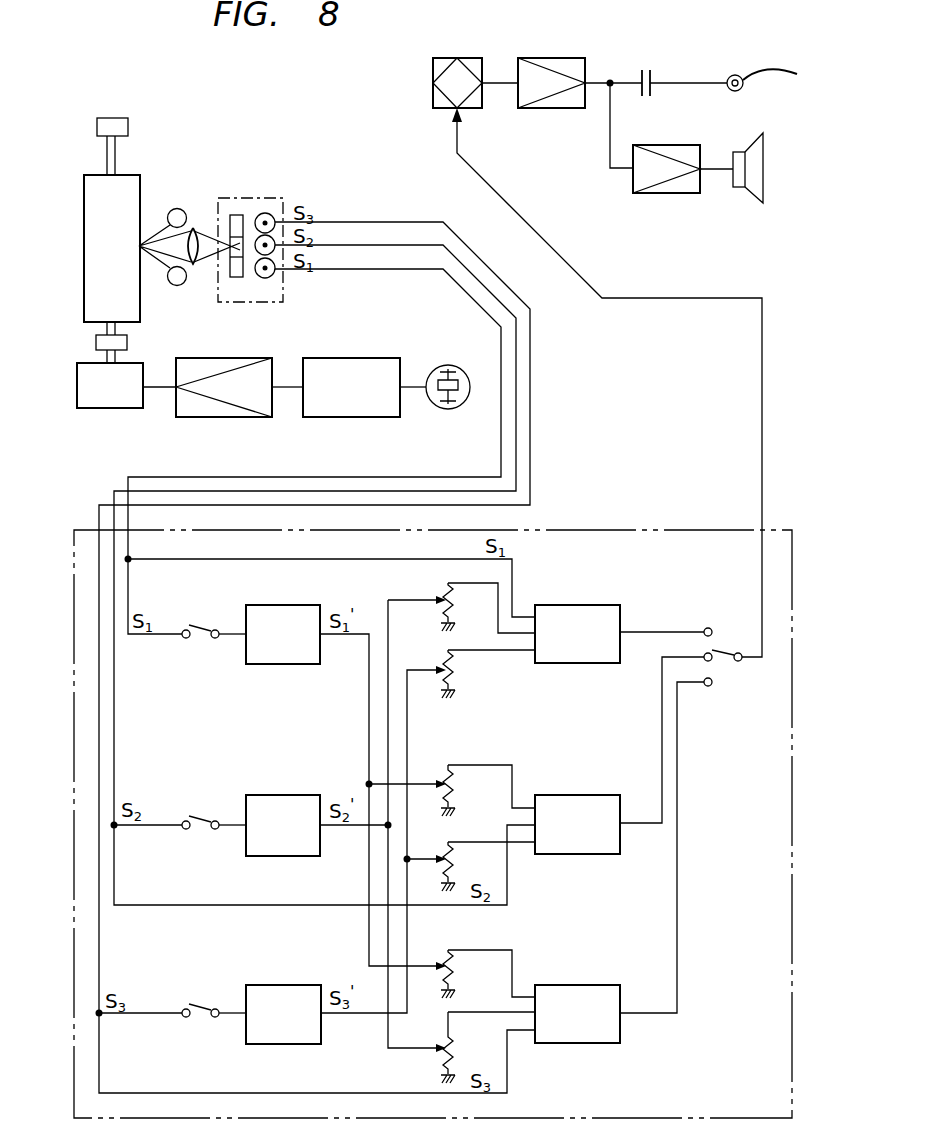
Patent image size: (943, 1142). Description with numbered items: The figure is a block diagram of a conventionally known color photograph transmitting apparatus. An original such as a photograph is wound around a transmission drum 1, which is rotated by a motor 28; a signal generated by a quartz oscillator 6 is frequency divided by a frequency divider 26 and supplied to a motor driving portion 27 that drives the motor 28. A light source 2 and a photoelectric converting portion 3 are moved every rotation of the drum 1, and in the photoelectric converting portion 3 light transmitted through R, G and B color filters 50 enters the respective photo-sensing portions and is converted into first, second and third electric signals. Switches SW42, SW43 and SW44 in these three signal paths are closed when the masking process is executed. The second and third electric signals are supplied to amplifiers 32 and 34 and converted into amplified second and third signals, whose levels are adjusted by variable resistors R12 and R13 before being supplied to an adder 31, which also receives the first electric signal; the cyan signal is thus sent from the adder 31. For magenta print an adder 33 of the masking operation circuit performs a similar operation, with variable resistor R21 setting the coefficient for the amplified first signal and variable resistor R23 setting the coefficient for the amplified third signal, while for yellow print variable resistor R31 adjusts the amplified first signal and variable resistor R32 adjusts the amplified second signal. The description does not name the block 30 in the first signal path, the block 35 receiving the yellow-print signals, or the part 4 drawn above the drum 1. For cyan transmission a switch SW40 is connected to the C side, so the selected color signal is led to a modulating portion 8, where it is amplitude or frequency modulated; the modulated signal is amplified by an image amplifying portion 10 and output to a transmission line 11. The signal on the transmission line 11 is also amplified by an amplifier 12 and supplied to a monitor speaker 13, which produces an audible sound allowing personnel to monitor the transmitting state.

The transmission drum 1 is at (140, 184).
The light source 2 is at (197, 227).
The photoelectric converting portion 3 is at (250, 241).
The drum bearing 4 is at (128, 128).
The quartz oscillator 6 is at (452, 409).
The modulating portion 8 is at (472, 58).
The image amplifying portion 10 is at (566, 58).
The transmission line 11 is at (768, 70).
The amplifier 12 is at (683, 193).
The monitor speaker 13 is at (756, 203).
The frequency divider 26 is at (383, 417).
The motor driving portion 27 is at (258, 417).
The motor 28 is at (128, 408).
The amplifier 30 is at (301, 605).
The adder 31 is at (597, 605).
The amplifier 32 is at (306, 795).
The adder 33 is at (600, 795).
The amplifier 34 is at (306, 985).
The adder 35 is at (600, 985).
The color filters 50 is at (237, 277).
The variable resistor R12 is at (488, 608).
The variable resistor R13 is at (488, 674).
The variable resistor R21 is at (488, 790).
The variable resistor R23 is at (488, 866).
The variable resistor R31 is at (488, 974).
The variable resistor R32 is at (488, 1047).
The switch SW40 is at (729, 651).
The switch SW42 is at (193, 645).
The switch SW43 is at (196, 835).
The switch SW44 is at (198, 1025).